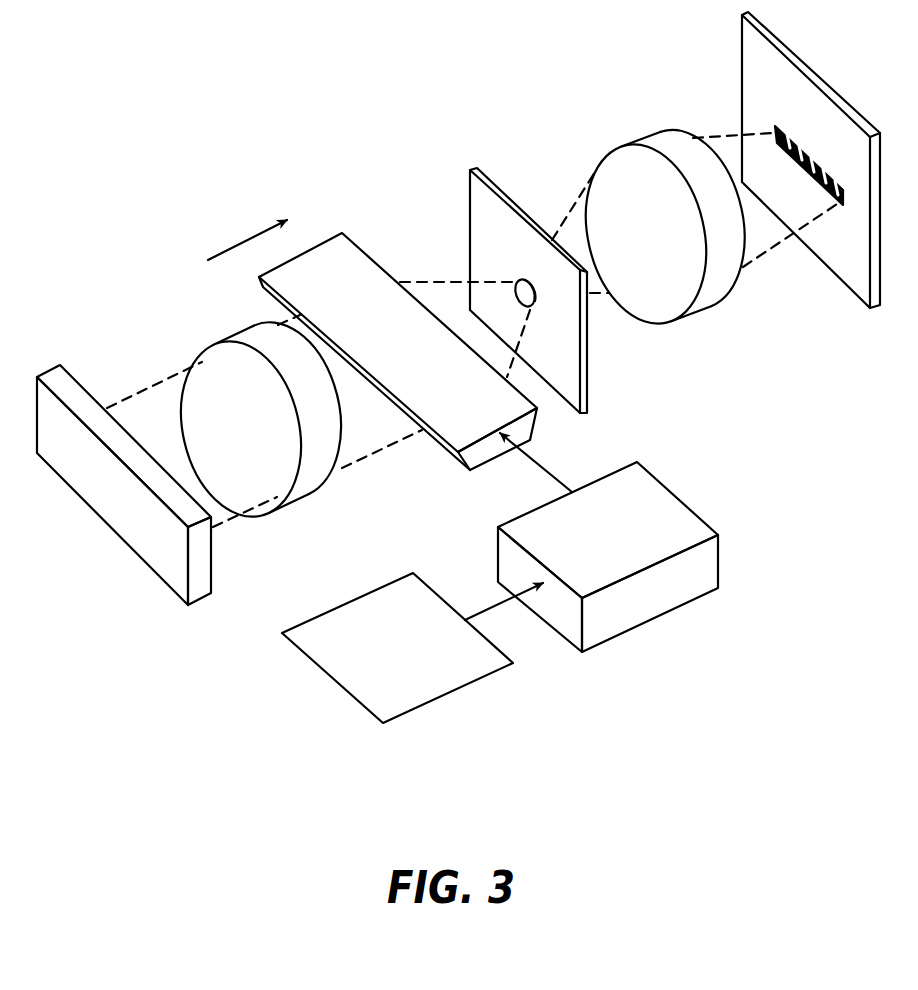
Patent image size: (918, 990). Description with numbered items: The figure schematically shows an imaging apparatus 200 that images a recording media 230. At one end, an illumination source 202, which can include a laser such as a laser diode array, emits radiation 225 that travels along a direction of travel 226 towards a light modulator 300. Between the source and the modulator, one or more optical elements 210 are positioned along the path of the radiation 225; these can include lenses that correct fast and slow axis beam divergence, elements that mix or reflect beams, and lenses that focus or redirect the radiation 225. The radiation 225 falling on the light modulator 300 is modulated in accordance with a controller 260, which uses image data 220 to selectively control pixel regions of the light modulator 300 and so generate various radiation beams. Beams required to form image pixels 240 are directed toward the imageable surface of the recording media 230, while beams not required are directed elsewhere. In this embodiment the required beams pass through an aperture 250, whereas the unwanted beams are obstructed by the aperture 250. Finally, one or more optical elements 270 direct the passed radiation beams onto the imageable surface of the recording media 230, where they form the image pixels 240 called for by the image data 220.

The imaging apparatus 200 is at (412, 182).
The illumination source 202 is at (72, 370).
The optical elements 210 is at (248, 337).
The image data 220 is at (412, 648).
The radiation 225 is at (233, 522).
The direction of travel 226 is at (252, 234).
The recording media 230 is at (858, 270).
The image pixels 240 is at (807, 152).
The aperture 250 is at (590, 362).
The controller 260 is at (608, 542).
The optical elements 270 is at (655, 142).
The light modulator 300 is at (320, 238).